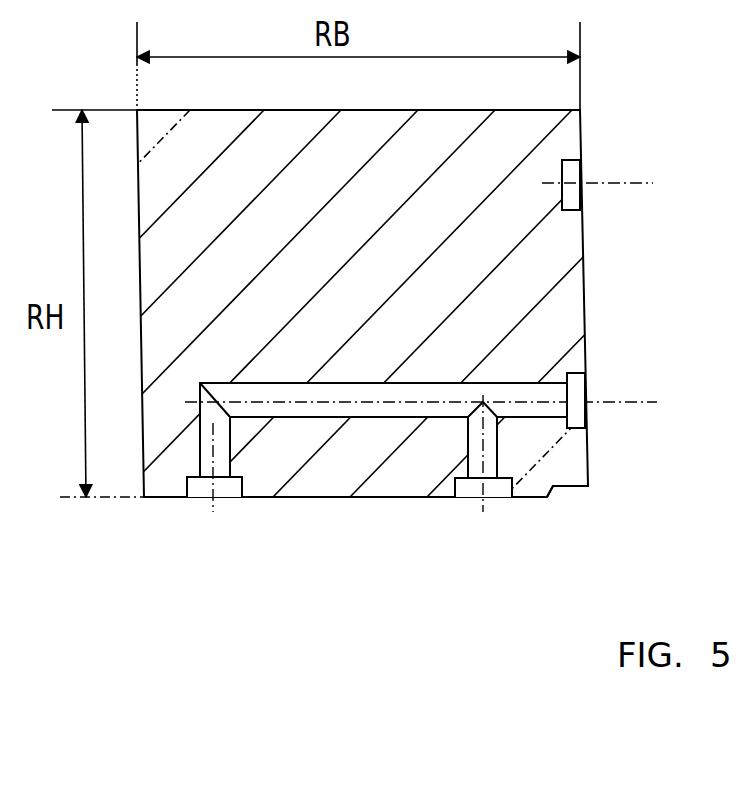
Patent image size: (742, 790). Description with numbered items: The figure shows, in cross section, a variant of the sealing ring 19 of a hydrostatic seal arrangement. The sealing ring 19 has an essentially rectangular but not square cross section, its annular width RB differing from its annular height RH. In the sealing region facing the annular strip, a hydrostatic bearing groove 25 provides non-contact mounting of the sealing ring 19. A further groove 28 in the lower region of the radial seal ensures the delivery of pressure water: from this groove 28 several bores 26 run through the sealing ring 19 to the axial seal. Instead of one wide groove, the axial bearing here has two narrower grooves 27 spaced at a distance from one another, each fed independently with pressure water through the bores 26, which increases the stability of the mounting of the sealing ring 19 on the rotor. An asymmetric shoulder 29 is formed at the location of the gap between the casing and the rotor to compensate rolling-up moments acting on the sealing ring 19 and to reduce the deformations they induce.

The sealing ring 19 is at (348, 239).
The groove 25 is at (572, 173).
The bores 26 is at (531, 405).
The grooves 27 is at (228, 489).
The groove 28 is at (578, 390).
The asymmetric shoulder 29 is at (564, 501).